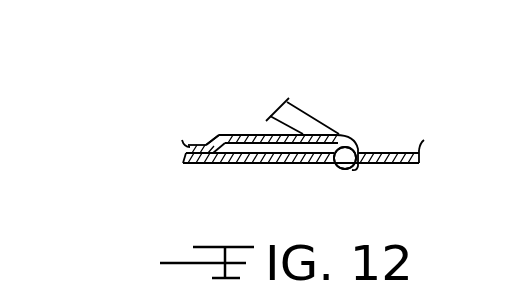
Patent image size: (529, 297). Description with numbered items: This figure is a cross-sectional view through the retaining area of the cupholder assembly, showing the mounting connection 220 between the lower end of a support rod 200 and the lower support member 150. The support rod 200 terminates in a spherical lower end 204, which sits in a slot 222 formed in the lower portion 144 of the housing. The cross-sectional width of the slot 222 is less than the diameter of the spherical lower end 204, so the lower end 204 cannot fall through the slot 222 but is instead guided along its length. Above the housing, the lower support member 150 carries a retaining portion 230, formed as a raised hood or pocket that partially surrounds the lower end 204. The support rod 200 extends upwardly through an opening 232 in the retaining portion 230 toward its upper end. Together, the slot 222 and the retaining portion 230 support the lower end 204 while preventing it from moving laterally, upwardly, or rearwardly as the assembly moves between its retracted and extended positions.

The mounting connection 220 is at (408, 63).
The support rod 200 is at (292, 112).
The spherical lower end 204 is at (349, 133).
The slot 222 is at (354, 170).
The lower support member 150 is at (401, 151).
The lower portion 144 is at (397, 164).
The opening 232 is at (248, 130).
The retaining portion 230 is at (217, 134).